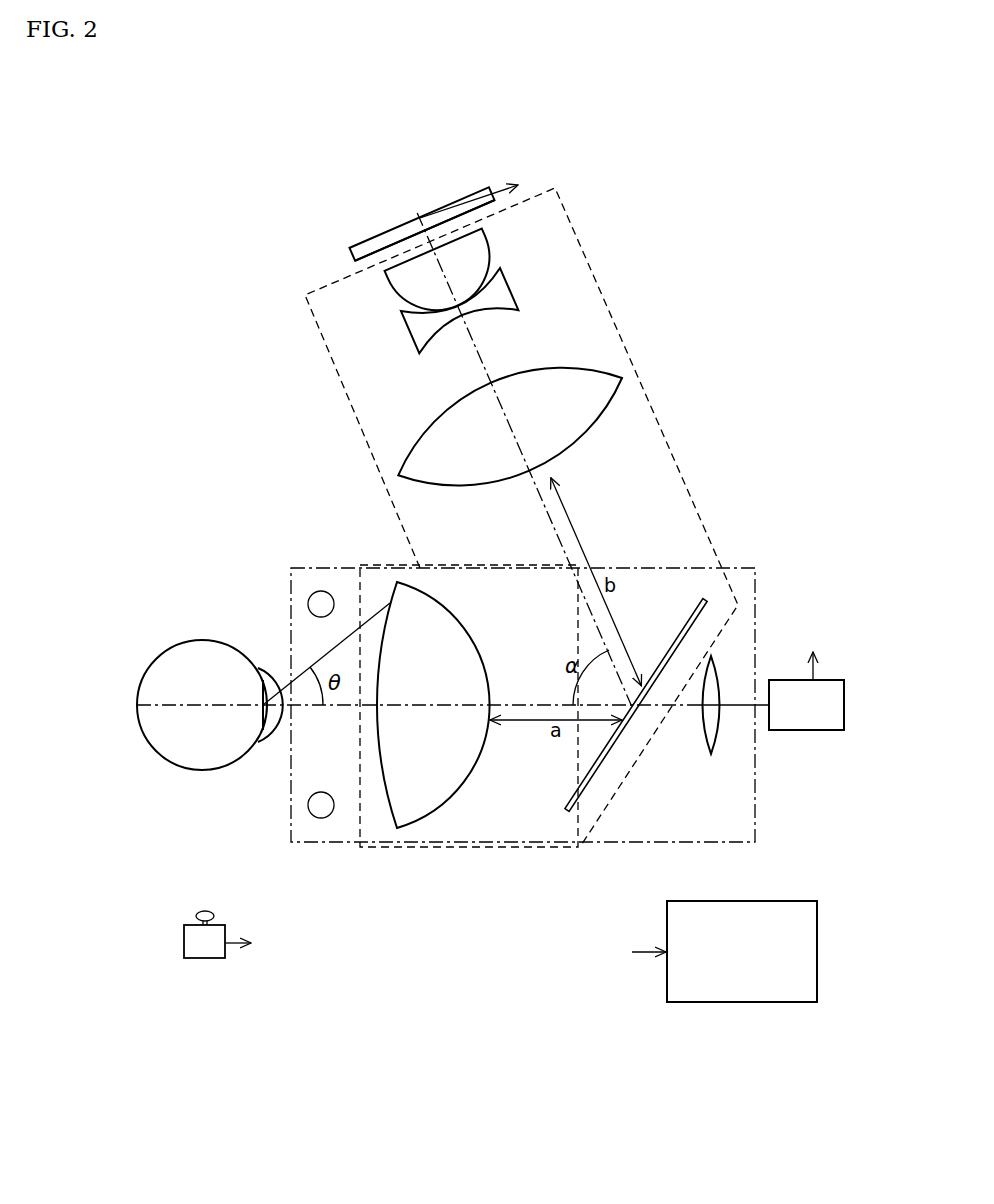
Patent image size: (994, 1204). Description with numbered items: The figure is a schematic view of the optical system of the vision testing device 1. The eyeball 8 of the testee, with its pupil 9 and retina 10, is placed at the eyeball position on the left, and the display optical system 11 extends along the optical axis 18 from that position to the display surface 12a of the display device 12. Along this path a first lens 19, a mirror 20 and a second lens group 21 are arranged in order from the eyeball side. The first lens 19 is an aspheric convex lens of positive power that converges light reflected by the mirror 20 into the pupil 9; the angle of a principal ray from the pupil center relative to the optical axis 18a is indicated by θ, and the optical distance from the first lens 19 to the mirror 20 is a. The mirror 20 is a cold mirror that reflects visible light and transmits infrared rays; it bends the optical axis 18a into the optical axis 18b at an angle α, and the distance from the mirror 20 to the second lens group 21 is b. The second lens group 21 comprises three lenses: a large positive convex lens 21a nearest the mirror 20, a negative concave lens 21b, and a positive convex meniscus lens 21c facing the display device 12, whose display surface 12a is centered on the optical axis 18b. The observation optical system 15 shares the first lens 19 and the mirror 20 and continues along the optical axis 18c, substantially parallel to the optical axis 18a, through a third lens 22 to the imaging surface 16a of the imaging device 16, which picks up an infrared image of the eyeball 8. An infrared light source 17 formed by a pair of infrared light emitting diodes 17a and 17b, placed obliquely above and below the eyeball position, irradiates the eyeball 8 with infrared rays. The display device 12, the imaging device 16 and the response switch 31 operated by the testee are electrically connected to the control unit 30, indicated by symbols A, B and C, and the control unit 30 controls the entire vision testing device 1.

The vision testing device 1 is at (842, 1051).
The eyeball 8 is at (203, 770).
The pupil 9 is at (258, 702).
The retina 10 is at (160, 745).
The display optical system 11 is at (680, 468).
The display device 12 is at (352, 248).
The display surface 12a is at (372, 270).
The observation optical system 15 is at (753, 568).
The imaging device 16 is at (809, 732).
The imaging surface 16a is at (770, 696).
The infrared light source 17 is at (336, 705).
The infrared light emitting diode 17a is at (321, 591).
The infrared light emitting diode 17b is at (320, 818).
The optical axis 18 is at (453, 521).
The optical axis 18a is at (516, 705).
The optical axis 18b is at (552, 520).
The optical axis 18c is at (745, 707).
The first lens 19 is at (445, 600).
The mirror 20 is at (578, 782).
The second lens group 21 is at (522, 365).
The lens 21a is at (510, 426).
The lens 21b is at (522, 303).
The lens 21c is at (487, 247).
The third lens 22 is at (703, 720).
The control unit 30 is at (770, 900).
The response switch 31 is at (200, 958).